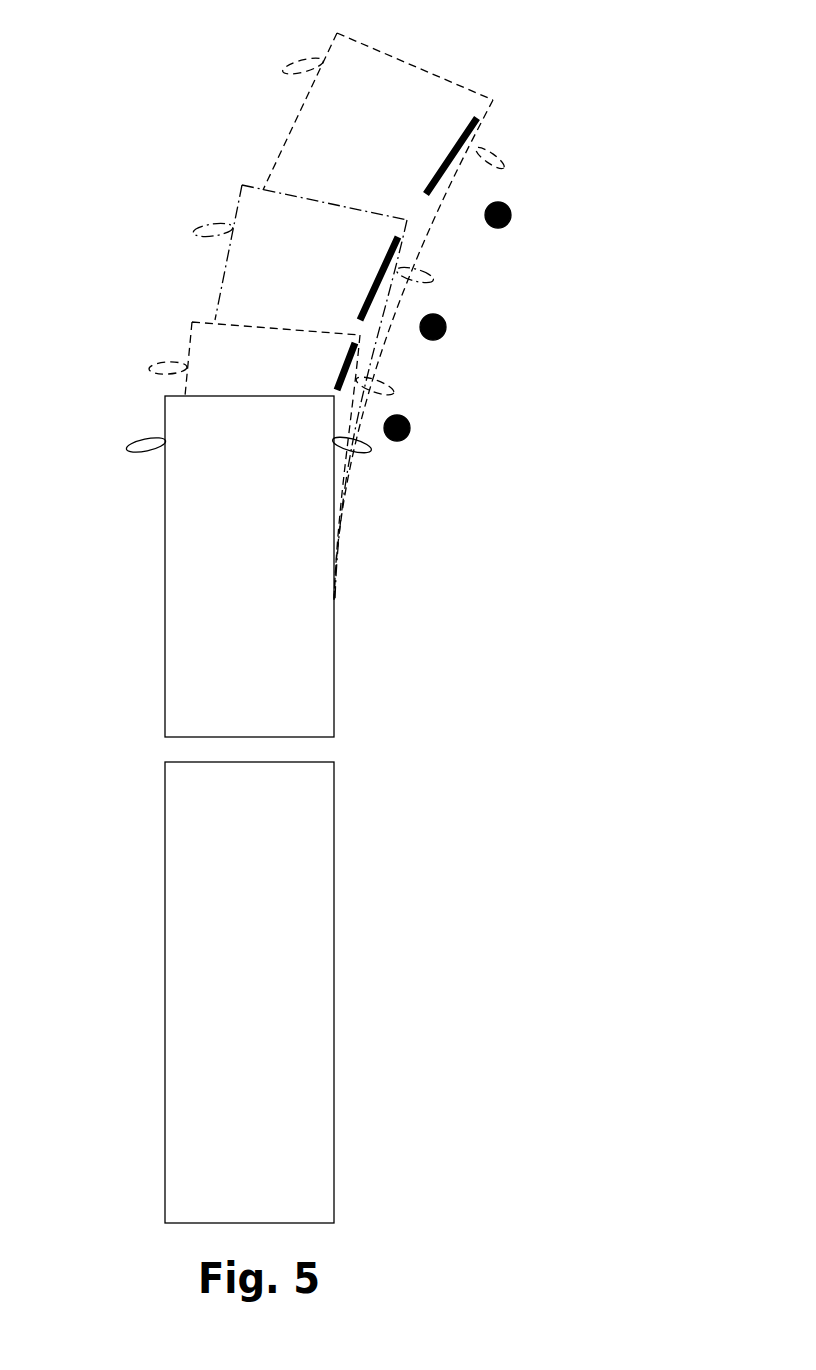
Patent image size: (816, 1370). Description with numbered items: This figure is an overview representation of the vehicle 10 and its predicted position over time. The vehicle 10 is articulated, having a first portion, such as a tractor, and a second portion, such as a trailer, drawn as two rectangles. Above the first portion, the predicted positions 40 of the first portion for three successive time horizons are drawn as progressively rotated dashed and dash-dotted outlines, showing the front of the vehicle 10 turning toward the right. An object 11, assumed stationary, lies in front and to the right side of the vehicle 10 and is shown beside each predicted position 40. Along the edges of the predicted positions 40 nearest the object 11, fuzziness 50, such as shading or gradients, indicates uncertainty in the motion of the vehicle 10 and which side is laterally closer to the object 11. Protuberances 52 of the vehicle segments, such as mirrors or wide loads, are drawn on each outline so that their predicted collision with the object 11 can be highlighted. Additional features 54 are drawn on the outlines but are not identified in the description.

The vehicle 10 is at (165, 592).
The object 11 is at (512, 212).
The predicted positions and paths 40 is at (288, 138).
The fuzziness 50 is at (476, 116).
The protuberances 52 is at (457, 150).
The connector socket 54 is at (507, 153).